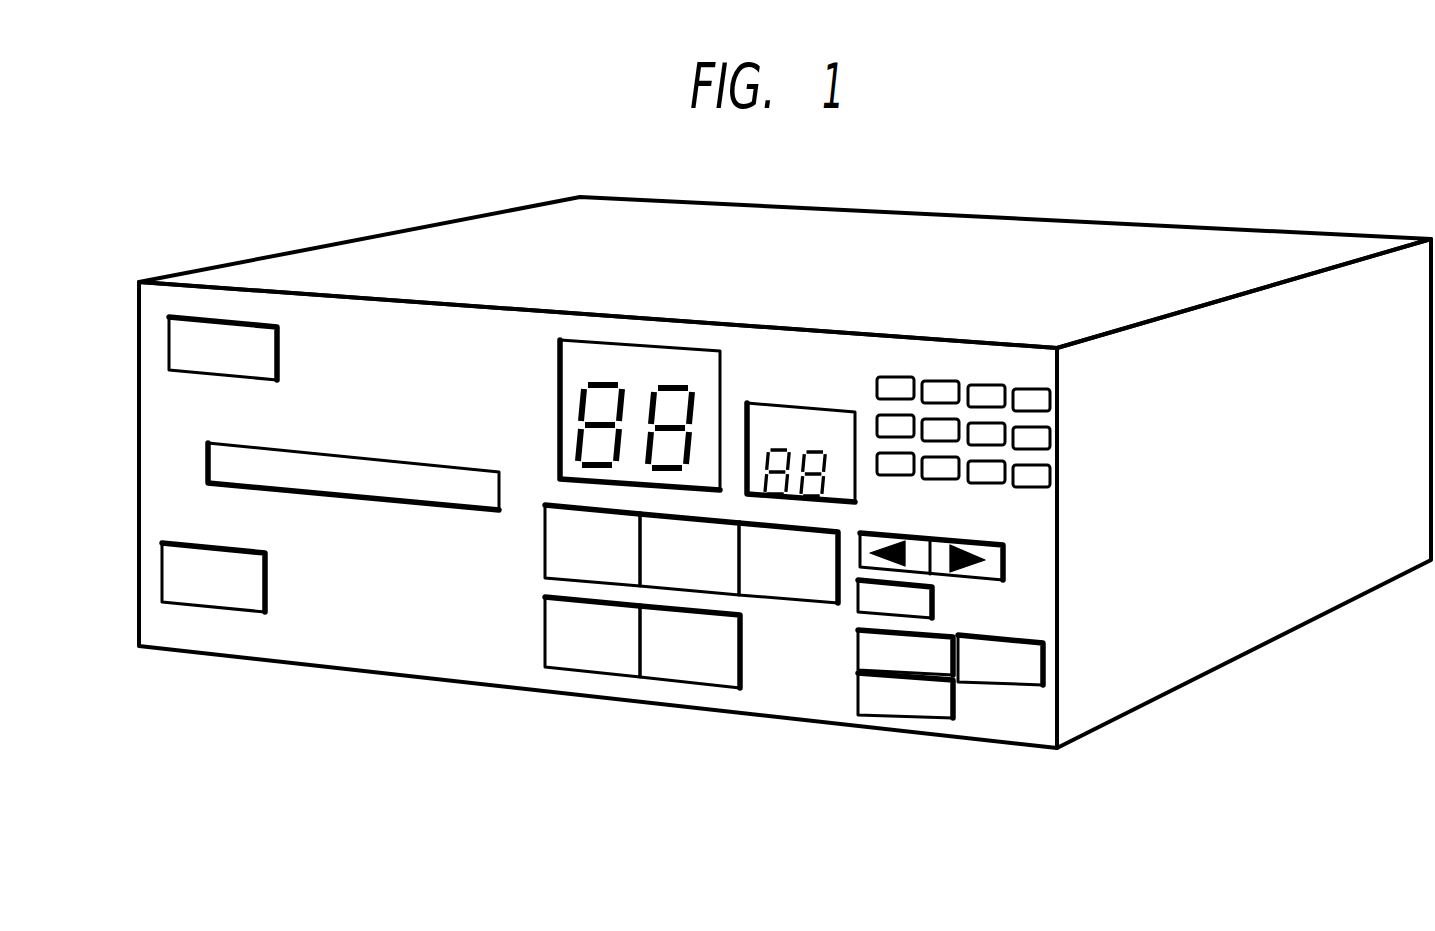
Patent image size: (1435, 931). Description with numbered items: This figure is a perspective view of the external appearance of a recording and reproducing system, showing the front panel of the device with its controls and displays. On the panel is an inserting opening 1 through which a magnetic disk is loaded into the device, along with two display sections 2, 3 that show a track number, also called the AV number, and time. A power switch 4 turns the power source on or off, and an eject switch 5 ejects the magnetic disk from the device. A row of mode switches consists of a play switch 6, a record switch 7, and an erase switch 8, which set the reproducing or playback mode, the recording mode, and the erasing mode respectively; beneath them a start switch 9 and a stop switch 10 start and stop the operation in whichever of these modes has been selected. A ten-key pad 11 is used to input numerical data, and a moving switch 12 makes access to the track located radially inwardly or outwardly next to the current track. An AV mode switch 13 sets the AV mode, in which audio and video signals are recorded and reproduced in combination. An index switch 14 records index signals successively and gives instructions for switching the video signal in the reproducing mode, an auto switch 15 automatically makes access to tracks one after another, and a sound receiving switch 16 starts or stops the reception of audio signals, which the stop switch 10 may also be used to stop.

The inserting opening 1 is at (207, 465).
The display section 2 is at (635, 340).
The display section 3 is at (800, 403).
The power switch 4 is at (169, 345).
The eject switch 5 is at (162, 570).
The play switch 6 is at (545, 568).
The record switch 7 is at (743, 598).
The erase switch 8 is at (805, 605).
The start switch 9 is at (600, 676).
The stop switch 10 is at (700, 690).
The ten-key pad 11 is at (1062, 385).
The moving switch 12 is at (1003, 568).
The AV mode switch 13 is at (932, 605).
The index switch 14 is at (858, 650).
The auto switch 15 is at (1043, 663).
The sound receiving switch 16 is at (937, 718).